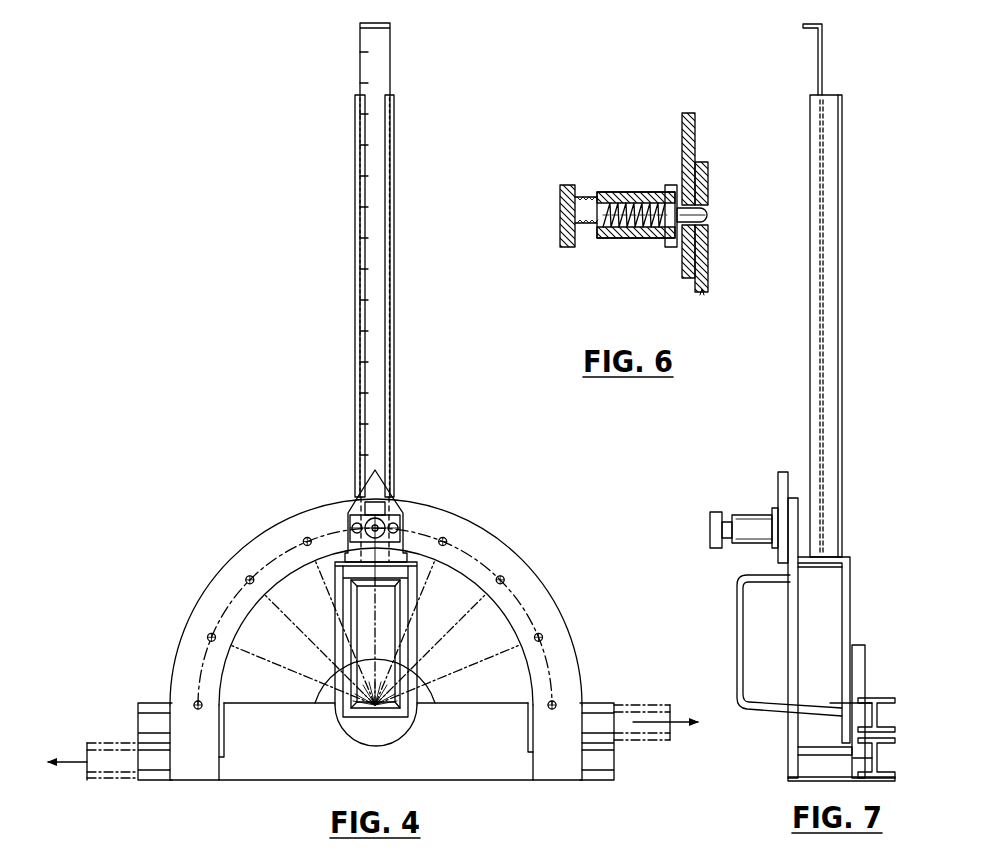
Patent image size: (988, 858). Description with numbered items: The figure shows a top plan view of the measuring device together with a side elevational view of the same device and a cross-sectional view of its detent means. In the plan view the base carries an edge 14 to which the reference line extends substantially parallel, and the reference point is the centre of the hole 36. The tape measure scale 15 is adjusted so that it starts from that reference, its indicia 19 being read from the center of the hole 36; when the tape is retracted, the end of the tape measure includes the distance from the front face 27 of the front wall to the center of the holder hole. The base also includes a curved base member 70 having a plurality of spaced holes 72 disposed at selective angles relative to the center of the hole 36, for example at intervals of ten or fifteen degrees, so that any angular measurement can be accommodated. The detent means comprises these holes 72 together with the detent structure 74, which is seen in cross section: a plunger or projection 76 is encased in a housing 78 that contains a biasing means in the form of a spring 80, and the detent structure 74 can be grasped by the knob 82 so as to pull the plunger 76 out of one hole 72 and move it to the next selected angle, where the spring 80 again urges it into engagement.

In FIG. 4, the edge 14 is at (463, 703).
In FIG. 4, the scale 15 is at (373, 59).
In FIG. 4, the indicia 19 is at (368, 128).
In FIG. 4, the front face 27 is at (408, 560).
In FIG. 4, the hole 36 is at (390, 710).
In FIG. 6, the curved base member 70 is at (698, 167).
In FIG. 6, the holes 72 is at (708, 215).
In FIG. 6, the detent structure 74 is at (588, 227).
In FIG. 6, the plunger 76 is at (680, 255).
In FIG. 6, the housing 78 is at (607, 194).
In FIG. 6, the spring 80 is at (620, 236).
In FIG. 6, the knob 82 is at (558, 205).